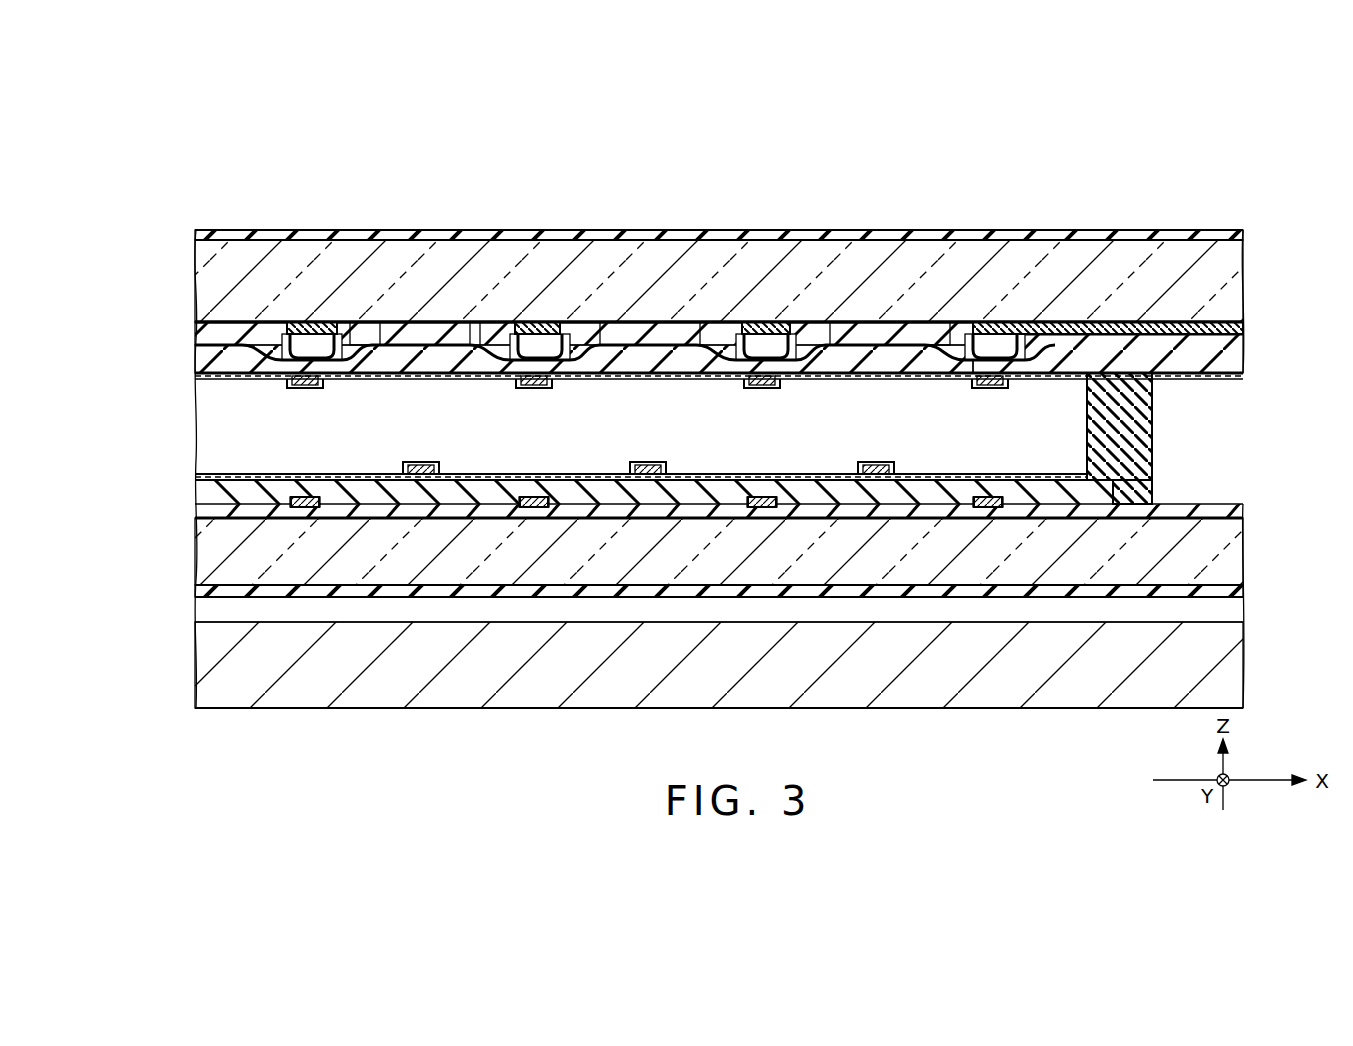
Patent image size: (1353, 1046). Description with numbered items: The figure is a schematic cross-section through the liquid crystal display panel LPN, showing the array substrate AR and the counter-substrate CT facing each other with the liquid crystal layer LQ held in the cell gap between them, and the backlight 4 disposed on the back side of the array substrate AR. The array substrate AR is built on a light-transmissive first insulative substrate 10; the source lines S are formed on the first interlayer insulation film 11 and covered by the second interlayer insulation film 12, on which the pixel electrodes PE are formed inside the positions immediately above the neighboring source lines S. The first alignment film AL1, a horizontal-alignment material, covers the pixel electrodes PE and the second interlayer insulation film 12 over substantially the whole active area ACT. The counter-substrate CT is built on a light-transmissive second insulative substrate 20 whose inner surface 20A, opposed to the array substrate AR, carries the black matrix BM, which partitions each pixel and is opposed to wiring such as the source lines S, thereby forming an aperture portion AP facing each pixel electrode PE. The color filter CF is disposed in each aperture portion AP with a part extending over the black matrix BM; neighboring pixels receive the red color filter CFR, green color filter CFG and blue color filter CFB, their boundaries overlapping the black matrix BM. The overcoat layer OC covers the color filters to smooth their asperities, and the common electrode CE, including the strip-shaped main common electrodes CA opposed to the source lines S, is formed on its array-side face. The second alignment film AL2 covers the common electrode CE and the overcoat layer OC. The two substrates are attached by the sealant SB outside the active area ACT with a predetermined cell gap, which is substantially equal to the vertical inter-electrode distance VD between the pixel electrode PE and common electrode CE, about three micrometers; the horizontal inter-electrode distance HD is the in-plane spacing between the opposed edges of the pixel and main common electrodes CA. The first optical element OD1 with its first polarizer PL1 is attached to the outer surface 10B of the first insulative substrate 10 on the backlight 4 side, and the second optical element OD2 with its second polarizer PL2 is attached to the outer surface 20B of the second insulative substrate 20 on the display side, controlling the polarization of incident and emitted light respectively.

The active area ACT is at (985, 378).
The aperture portion AP is at (748, 373).
The liquid crystal display panel LPN is at (1252, 251).
The counter-substrate CT is at (186, 291).
The array substrate AR is at (182, 552).
The liquid crystal layer LQ is at (200, 466).
The second insulative substrate 20 is at (712, 275).
The inner surface of the second insulative substrate 20A is at (250, 345).
The outer surface of the second insulative substrate 20B is at (230, 232).
The second optical element OD2 is at (670, 240).
The second polarizer PL2 is at (197, 232).
The color filter CF is at (724, 274).
The red color filter CFR is at (248, 330).
The green color filter CFG is at (432, 330).
The blue color filter CFB is at (648, 330).
The black matrix BM is at (308, 322).
The main common electrode CA is at (325, 350).
The overcoat layer OC is at (1240, 360).
The common electrode CE is at (278, 387).
The second alignment film AL2 is at (1073, 378).
The sealant SB is at (1140, 437).
The first alignment film AL1 is at (1063, 468).
The pixel electrode PE is at (421, 476).
The source line S is at (305, 508).
The second interlayer insulation film 12 is at (1025, 492).
The first interlayer insulation film 11 is at (750, 479).
The first insulative substrate 10 is at (1240, 555).
The outer surface of the first insulative substrate 10B is at (240, 603).
The first optical element OD1 is at (668, 593).
The first polarizer PL1 is at (226, 593).
The backlight 4 is at (205, 676).
The vertical inter-electrode distance VD is at (630, 467).
The horizontal inter-electrode distance HD is at (662, 466).